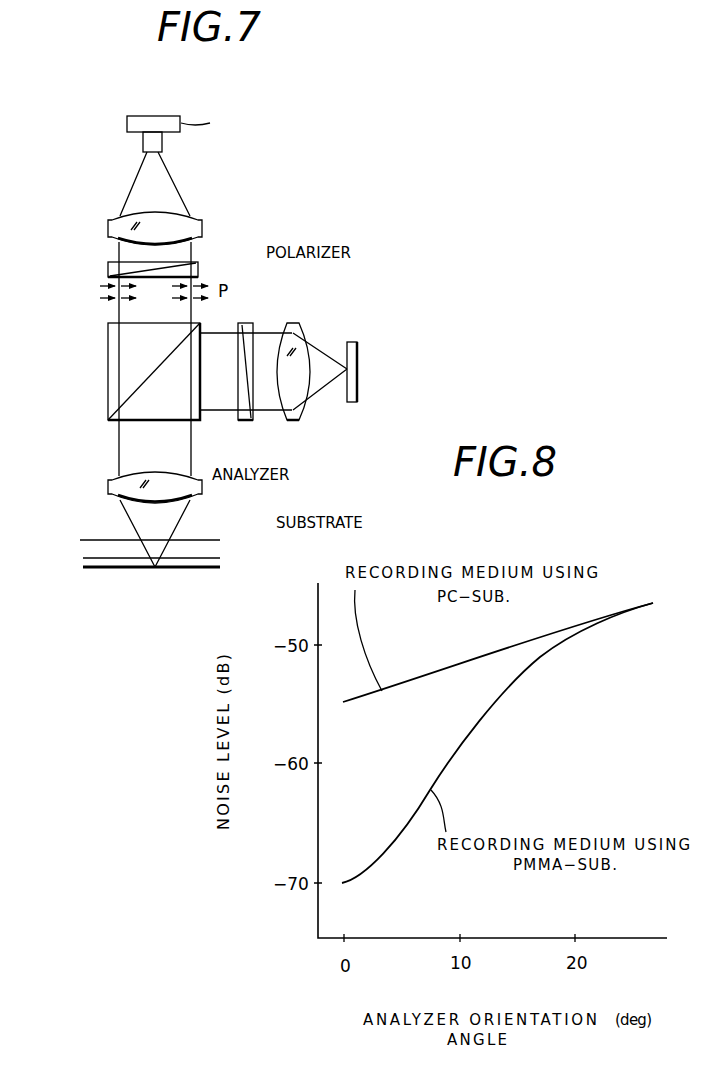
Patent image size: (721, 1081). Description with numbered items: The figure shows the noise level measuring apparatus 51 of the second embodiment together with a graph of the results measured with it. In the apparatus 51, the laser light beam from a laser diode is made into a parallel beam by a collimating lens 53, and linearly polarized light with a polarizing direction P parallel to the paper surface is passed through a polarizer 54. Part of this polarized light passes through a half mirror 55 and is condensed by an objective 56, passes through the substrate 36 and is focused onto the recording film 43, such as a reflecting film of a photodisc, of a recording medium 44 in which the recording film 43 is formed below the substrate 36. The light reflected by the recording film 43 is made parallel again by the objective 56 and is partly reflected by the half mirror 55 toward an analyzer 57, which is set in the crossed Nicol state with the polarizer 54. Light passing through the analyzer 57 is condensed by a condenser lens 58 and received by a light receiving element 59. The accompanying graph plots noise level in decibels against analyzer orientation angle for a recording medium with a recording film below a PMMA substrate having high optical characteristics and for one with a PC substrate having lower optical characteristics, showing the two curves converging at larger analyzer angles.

The noise level measuring apparatus 51 is at (258, 219).
The collimating lens 53 is at (198, 223).
The polarizer 54 is at (198, 267).
The half mirror 55 is at (108, 363).
The objective 56 is at (110, 485).
The analyzer 57 is at (245, 422).
The condenser lens 58 is at (297, 415).
The light receiving element 59 is at (352, 342).
The substrate 36 is at (210, 547).
The recording film 43 is at (217, 562).
The recording medium 44 is at (90, 553).